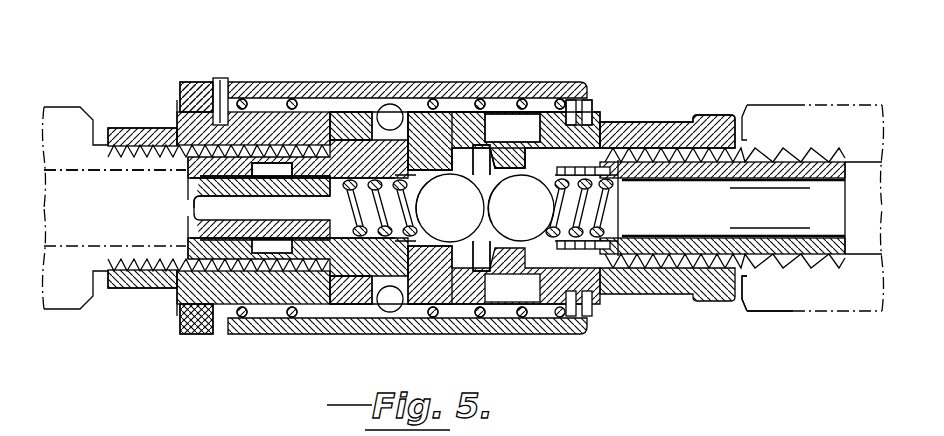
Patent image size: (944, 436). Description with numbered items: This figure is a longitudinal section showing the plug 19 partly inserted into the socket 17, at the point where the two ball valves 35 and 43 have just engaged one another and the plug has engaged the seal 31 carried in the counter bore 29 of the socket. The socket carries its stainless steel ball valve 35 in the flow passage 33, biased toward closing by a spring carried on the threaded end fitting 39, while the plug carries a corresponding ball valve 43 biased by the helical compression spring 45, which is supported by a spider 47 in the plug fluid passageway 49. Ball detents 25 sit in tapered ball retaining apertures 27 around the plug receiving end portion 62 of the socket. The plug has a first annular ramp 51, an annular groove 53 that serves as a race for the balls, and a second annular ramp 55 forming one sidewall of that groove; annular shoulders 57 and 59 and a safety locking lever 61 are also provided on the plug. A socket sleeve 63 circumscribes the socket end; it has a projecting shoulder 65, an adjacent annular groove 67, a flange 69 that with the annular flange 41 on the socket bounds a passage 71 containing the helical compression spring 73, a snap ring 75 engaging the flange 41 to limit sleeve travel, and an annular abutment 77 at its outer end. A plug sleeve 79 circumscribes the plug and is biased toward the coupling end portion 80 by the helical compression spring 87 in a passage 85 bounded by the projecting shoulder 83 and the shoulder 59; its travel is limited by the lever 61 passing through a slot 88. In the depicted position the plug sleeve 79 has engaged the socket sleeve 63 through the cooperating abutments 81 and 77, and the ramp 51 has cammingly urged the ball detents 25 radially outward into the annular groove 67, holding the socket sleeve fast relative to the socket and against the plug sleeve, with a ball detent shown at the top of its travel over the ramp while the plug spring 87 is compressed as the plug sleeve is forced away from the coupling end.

The socket 17 is at (665, 118).
The plug 19 is at (172, 118).
The ball detents 25 is at (420, 96).
The ball retaining apertures 27 is at (432, 325).
The counter bore 29 is at (513, 212).
The seal 31 is at (512, 128).
The flow passage 33 is at (772, 220).
The ball valve 35 is at (521, 208).
The threaded end fitting 39 is at (740, 300).
The annular flange 41 is at (555, 110).
The ball valve 43 is at (450, 208).
The helical compression spring 45 is at (362, 196).
The spider 47 is at (190, 172).
The plug fluid passageway 49 is at (205, 252).
The first annular ramp 51 is at (455, 118).
The annular groove 53 is at (345, 85).
The second annular ramp 55 is at (392, 104).
The annular shoulder 57 is at (272, 171).
The annular shoulder 59 is at (248, 84).
The safety locking lever 61 is at (220, 78).
The plug receiving end portion 62 is at (540, 328).
The socket sleeve 63 is at (498, 330).
The projecting shoulder 65 is at (308, 322).
The annular groove 67 is at (390, 312).
The flange 69 is at (580, 92).
The passage 71 is at (522, 98).
The helical compression spring 73 is at (492, 96).
The snap ring 75 is at (575, 105).
The annular abutment 77 is at (345, 318).
The plug sleeve 79 is at (320, 115).
The coupling end portion 80 is at (360, 100).
The annular abutment 81 is at (372, 100).
The projecting shoulder 83 is at (276, 322).
The passage 85 is at (262, 330).
The helical compression spring 87 is at (292, 98).
The slot 88 is at (205, 84).